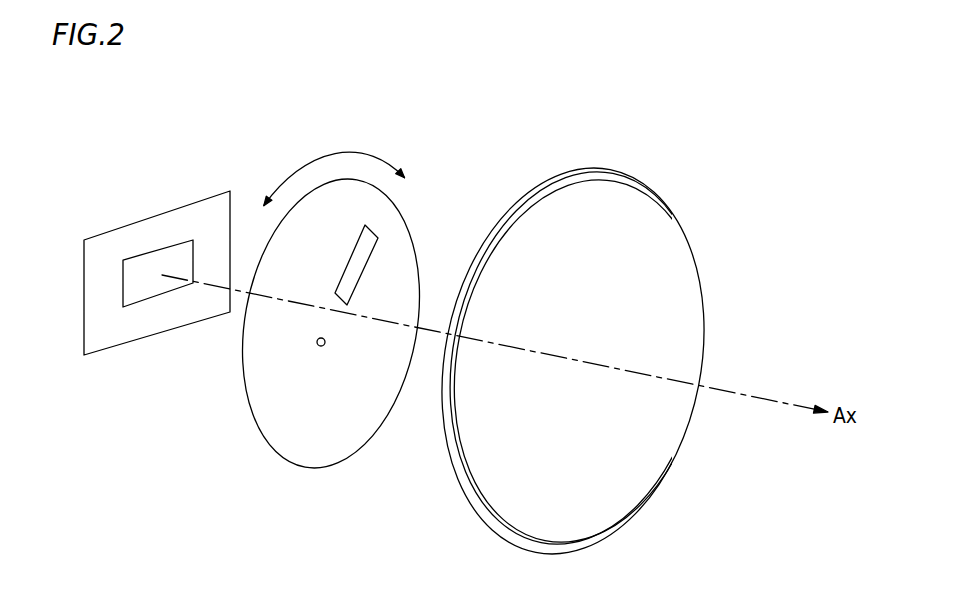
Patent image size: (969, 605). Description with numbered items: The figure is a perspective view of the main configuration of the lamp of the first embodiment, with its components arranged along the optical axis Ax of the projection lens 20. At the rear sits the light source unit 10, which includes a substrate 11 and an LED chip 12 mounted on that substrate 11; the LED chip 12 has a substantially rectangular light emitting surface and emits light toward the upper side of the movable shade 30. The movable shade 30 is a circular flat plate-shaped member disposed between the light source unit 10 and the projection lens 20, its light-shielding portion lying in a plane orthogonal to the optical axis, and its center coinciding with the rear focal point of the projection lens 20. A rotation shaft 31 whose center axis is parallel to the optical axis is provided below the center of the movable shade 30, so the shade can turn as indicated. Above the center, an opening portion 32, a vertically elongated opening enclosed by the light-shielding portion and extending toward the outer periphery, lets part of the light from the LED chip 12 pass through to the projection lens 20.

The light source unit 10 is at (118, 185).
The substrate 11 is at (193, 202).
The LED chip 12 is at (165, 248).
The projection lens 20 is at (707, 268).
The movable shade 30 is at (242, 428).
The rotation shaft 31 is at (318, 343).
The opening portion 32 is at (358, 253).